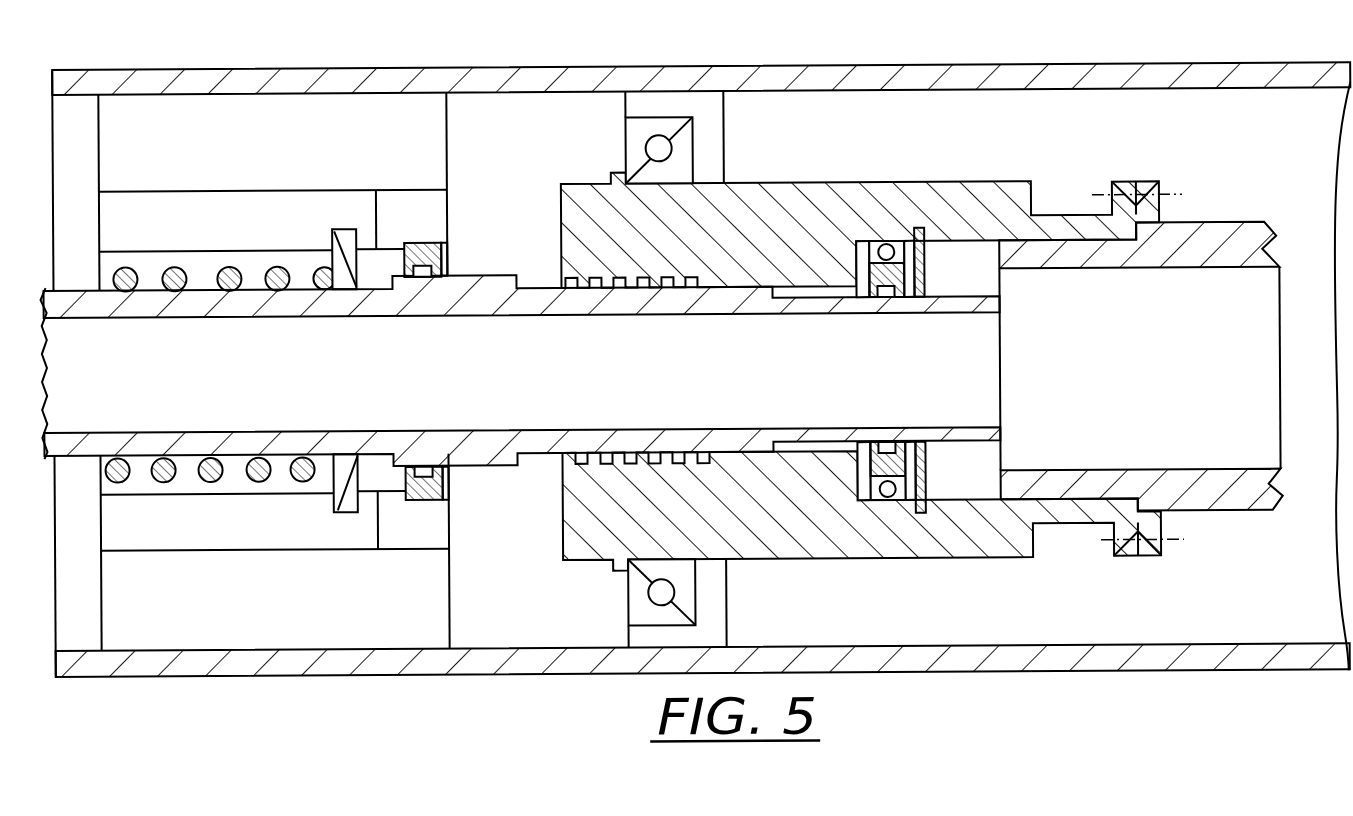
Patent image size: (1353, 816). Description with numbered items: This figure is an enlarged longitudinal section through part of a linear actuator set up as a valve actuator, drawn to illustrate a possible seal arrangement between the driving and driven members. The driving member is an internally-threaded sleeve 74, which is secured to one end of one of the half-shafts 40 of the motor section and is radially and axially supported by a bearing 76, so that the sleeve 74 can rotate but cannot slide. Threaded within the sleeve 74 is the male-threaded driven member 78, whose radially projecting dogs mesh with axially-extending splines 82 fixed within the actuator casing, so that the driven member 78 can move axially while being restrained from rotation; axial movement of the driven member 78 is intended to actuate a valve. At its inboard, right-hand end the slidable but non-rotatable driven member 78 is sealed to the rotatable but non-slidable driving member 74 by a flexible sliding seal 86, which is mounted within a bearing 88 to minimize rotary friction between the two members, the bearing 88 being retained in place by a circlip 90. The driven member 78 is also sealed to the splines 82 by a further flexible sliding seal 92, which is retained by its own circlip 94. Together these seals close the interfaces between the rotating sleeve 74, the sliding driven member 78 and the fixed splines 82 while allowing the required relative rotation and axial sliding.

The half-shaft 40 is at (1210, 247).
The internally-threaded sleeve 74 is at (921, 200).
The bearing 76 is at (627, 142).
The driven member 78 is at (555, 440).
The splines 82 is at (326, 222).
The flexible sliding seal 86 is at (897, 298).
The bearing 88 is at (897, 488).
The circlip 90 is at (920, 508).
The further flexible sliding seal 92 is at (447, 481).
The circlip 94 is at (447, 245).